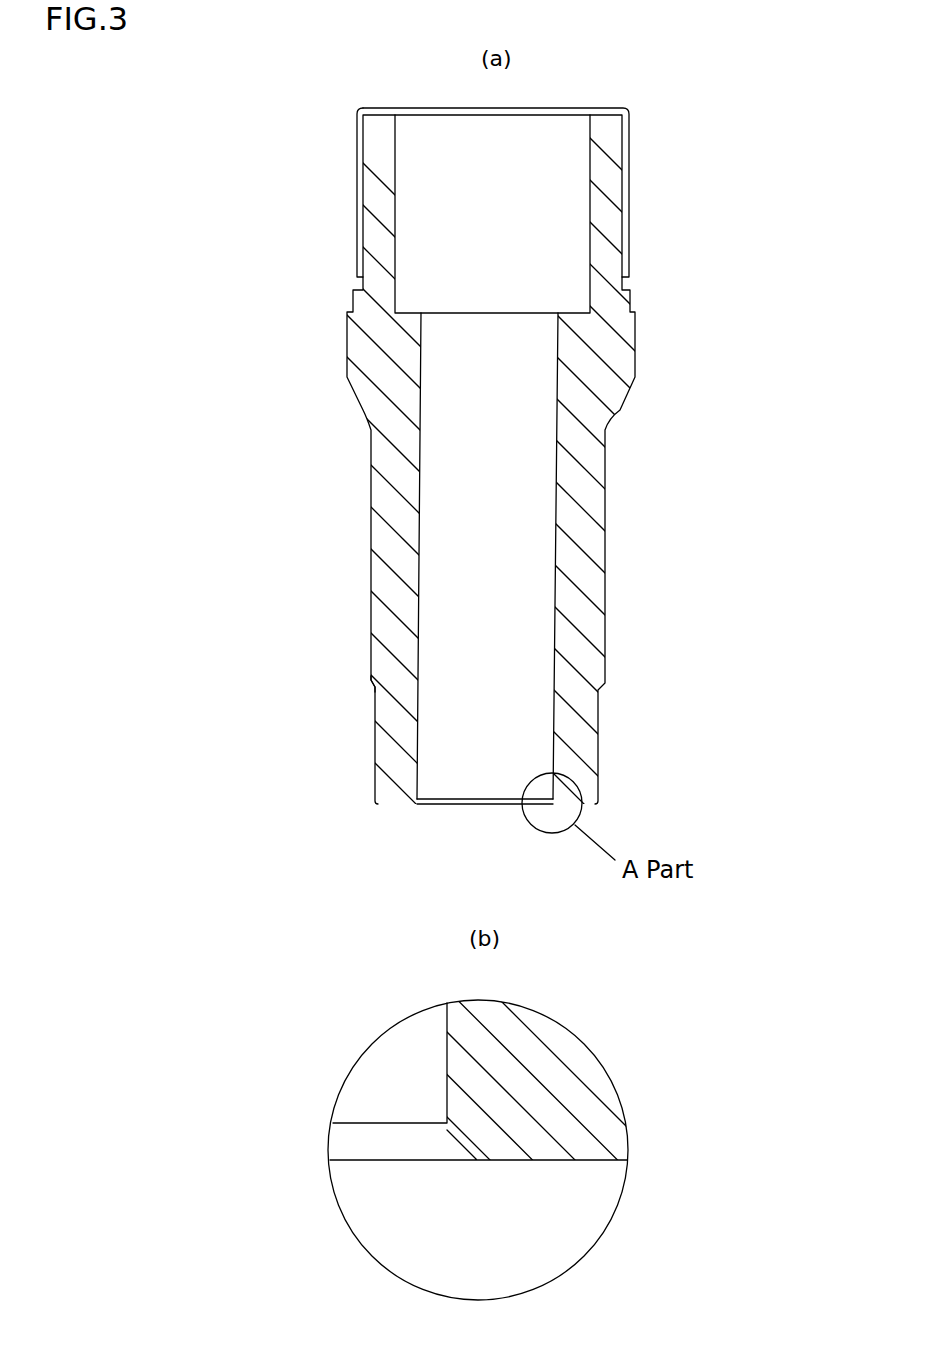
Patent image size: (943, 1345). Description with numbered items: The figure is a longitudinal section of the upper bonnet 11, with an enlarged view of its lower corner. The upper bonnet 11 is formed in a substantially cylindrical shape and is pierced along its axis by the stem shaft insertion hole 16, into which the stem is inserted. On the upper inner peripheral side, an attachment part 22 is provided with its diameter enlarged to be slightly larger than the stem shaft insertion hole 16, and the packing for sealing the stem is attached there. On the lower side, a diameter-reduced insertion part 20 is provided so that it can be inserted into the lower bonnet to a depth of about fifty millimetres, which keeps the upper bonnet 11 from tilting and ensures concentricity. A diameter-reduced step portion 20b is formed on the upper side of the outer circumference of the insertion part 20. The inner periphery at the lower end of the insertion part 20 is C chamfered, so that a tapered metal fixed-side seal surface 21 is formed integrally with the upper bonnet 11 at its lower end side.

The upper bonnet 11 is at (607, 473).
The stem shaft insertion hole 16 is at (415, 548).
The insertion part 20 is at (577, 741).
The step portion 20b is at (375, 684).
The fixed-side seal surface 21 is at (417, 802).
The attachment part 22 is at (592, 208).